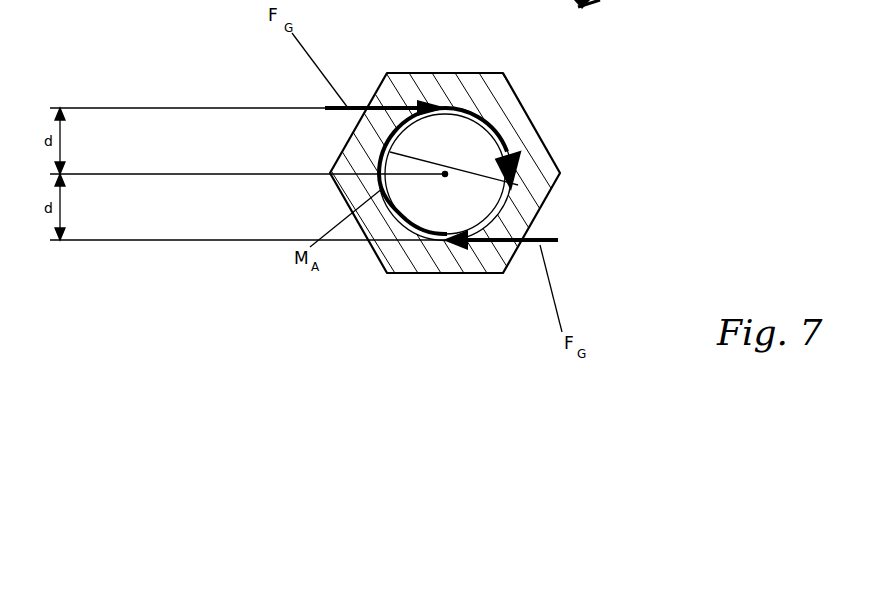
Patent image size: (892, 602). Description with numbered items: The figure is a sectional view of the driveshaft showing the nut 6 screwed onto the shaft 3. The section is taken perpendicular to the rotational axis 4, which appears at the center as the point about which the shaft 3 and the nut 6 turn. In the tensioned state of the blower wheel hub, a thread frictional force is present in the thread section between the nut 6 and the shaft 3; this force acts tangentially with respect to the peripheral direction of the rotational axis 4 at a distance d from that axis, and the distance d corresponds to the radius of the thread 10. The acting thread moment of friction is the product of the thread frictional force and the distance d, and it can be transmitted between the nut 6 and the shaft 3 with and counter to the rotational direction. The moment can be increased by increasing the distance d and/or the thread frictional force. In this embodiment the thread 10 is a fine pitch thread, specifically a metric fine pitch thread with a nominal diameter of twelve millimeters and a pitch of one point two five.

The nut 6 is at (507, 113).
The rotational axis 4 is at (445, 174).
The shaft 3 is at (473, 192).
The thread 10 is at (503, 213).